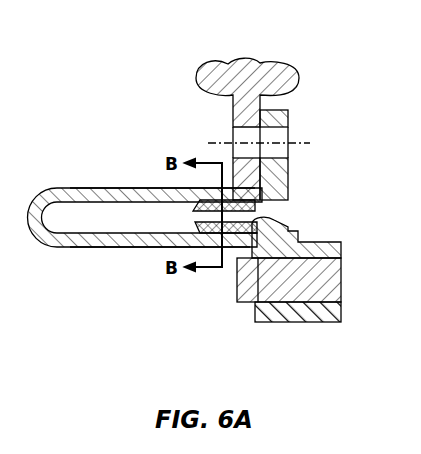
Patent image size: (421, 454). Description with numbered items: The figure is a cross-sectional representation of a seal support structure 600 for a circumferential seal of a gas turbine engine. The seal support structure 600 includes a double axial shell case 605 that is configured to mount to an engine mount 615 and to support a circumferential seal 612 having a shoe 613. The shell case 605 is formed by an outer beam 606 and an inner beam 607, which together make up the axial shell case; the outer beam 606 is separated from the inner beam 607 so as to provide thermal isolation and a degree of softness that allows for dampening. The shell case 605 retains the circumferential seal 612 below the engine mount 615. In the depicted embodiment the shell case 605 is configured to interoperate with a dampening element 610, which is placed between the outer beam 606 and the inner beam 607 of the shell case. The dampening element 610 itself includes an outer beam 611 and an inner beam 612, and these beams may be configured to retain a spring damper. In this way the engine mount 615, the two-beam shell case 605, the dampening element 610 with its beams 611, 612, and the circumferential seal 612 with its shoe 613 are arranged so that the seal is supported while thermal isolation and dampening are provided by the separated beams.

The seal support structure 600 is at (120, 73).
The double axial shell case 605 is at (133, 216).
The outer beam 606 is at (113, 187).
The inner beam 607 is at (95, 249).
The dampening element 610 is at (280, 211).
The outer beam 611 is at (290, 185).
The circumferential seal 612 is at (292, 219).
The shoe 613 is at (255, 303).
The engine mount 615 is at (240, 57).